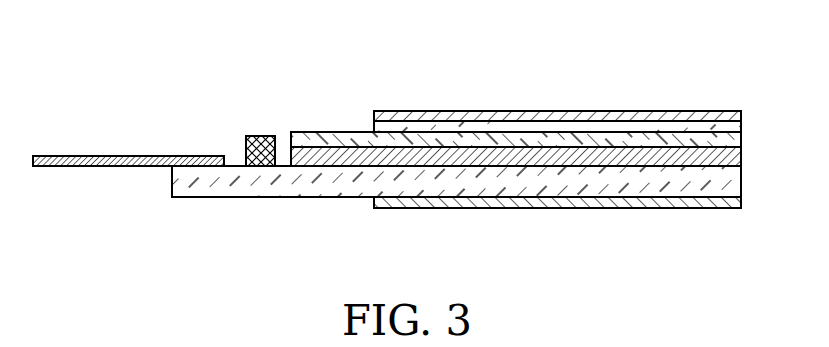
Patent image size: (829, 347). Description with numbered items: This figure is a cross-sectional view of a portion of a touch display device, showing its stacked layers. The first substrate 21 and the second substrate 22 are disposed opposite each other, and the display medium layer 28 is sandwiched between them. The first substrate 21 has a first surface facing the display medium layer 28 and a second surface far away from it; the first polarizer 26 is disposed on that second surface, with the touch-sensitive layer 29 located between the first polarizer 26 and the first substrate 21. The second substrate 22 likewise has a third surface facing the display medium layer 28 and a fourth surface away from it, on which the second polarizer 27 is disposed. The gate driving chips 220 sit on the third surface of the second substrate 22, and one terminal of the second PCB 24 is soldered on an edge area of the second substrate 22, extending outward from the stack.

The first substrate 21 is at (340, 139).
The second substrate 22 is at (230, 182).
The gate driving chips 220 is at (258, 136).
The second PCB 24 is at (106, 160).
The first polarizer 26 is at (468, 117).
The second polarizer 27 is at (571, 203).
The display medium layer 28 is at (677, 158).
The touch-sensitive layer 29 is at (578, 126).